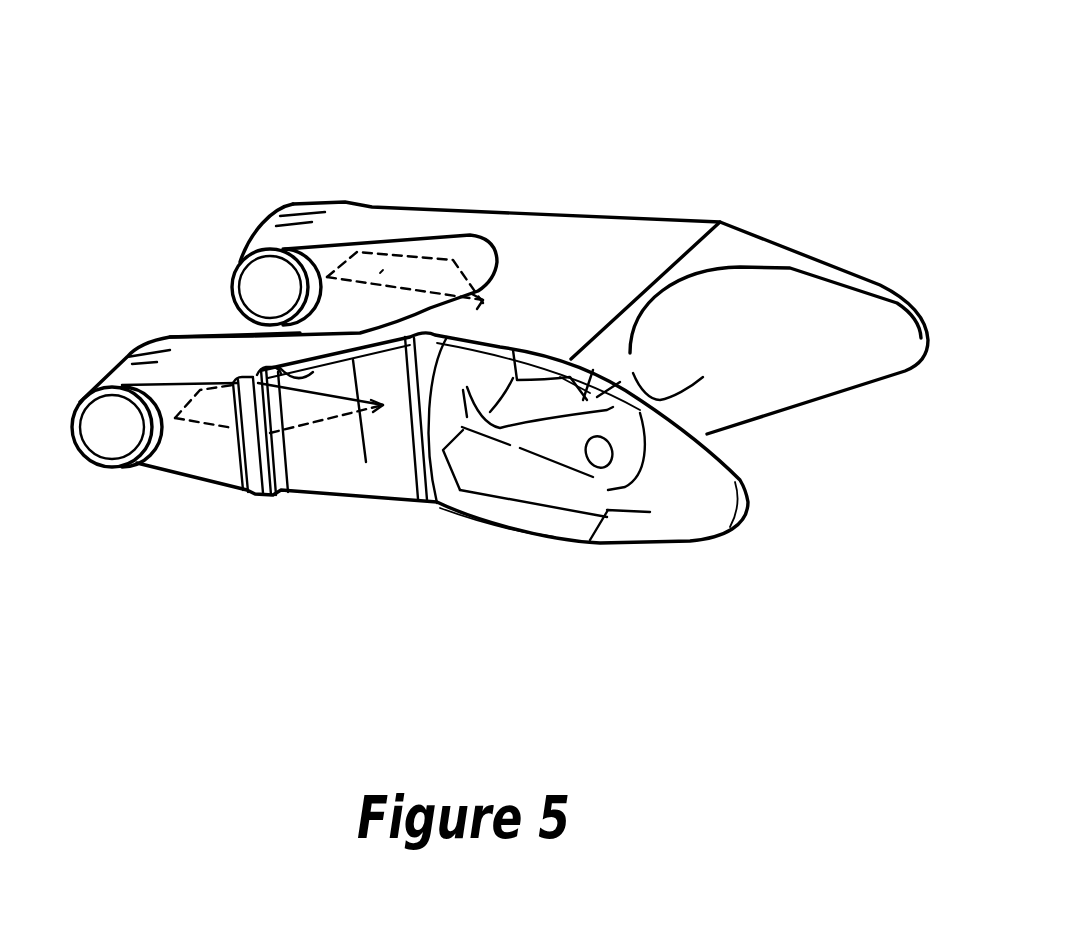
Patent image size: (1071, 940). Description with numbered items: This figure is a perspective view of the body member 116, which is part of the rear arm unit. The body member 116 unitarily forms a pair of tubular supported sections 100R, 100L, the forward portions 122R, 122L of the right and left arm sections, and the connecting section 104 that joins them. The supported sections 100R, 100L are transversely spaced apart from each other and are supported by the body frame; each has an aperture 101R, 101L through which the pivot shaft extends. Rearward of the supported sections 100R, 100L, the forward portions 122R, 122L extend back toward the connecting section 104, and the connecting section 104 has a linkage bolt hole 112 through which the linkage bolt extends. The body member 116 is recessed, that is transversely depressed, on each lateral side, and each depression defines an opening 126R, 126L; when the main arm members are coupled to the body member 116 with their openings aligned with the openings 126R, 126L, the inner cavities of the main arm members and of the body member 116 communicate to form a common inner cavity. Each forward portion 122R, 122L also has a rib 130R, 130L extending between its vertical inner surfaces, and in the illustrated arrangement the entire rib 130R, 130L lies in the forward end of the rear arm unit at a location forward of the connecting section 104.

The supported section 100L is at (130, 350).
The supported section 100R is at (300, 200).
The aperture 101L is at (107, 452).
The aperture 101R is at (260, 287).
The connecting section 104 is at (622, 245).
The linkage bolt hole 112 is at (598, 455).
The body member 116 is at (583, 165).
The forward portion 122L is at (200, 465).
The forward portion 122R is at (370, 197).
The opening 126L is at (267, 370).
The opening 126R is at (517, 203).
The rib 130L is at (295, 418).
The rib 130R is at (380, 273).